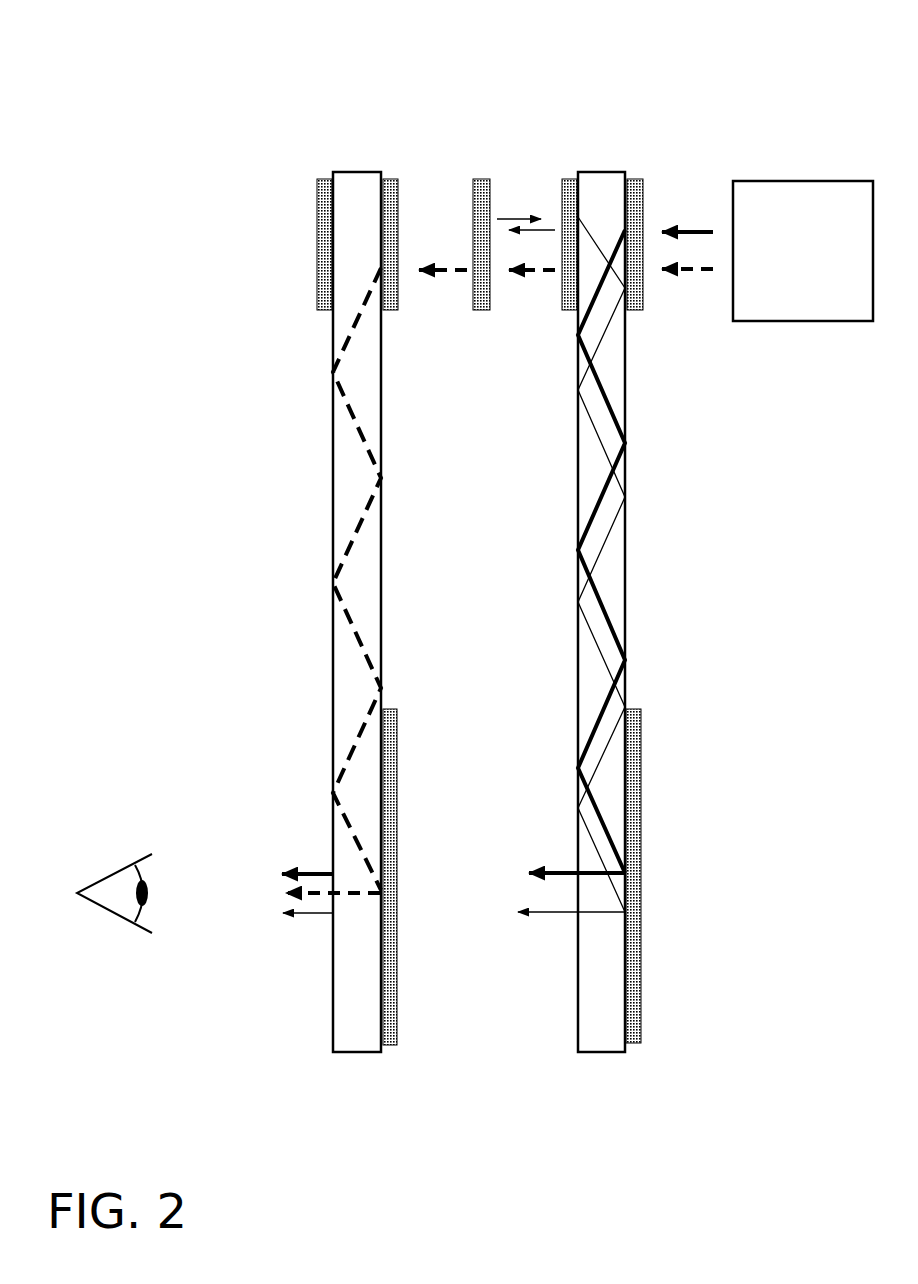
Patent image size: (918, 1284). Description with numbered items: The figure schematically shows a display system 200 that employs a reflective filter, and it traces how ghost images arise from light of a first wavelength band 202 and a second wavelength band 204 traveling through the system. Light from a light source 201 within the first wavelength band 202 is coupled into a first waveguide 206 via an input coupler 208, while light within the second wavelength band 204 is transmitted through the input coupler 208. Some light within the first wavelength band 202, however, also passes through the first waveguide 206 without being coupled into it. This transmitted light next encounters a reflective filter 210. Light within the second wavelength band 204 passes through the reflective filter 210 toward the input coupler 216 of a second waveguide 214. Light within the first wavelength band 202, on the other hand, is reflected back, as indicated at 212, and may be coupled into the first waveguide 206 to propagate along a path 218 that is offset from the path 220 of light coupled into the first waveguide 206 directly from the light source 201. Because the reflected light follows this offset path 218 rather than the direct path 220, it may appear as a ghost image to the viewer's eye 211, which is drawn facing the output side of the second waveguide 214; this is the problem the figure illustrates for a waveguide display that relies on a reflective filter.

The display system 200 is at (227, 47).
The light source 201 is at (782, 292).
The first wavelength band 202 is at (682, 220).
The second wavelength band 204 is at (675, 281).
The first waveguide 206 is at (602, 170).
The input coupler 208 is at (638, 178).
The reflective filter 210 is at (485, 178).
The eye of viewer 211 is at (105, 852).
The reflected light 212 is at (515, 205).
The second waveguide 214 is at (358, 172).
The input coupler 216 is at (395, 178).
The path 218 is at (558, 931).
The path 220 is at (558, 857).